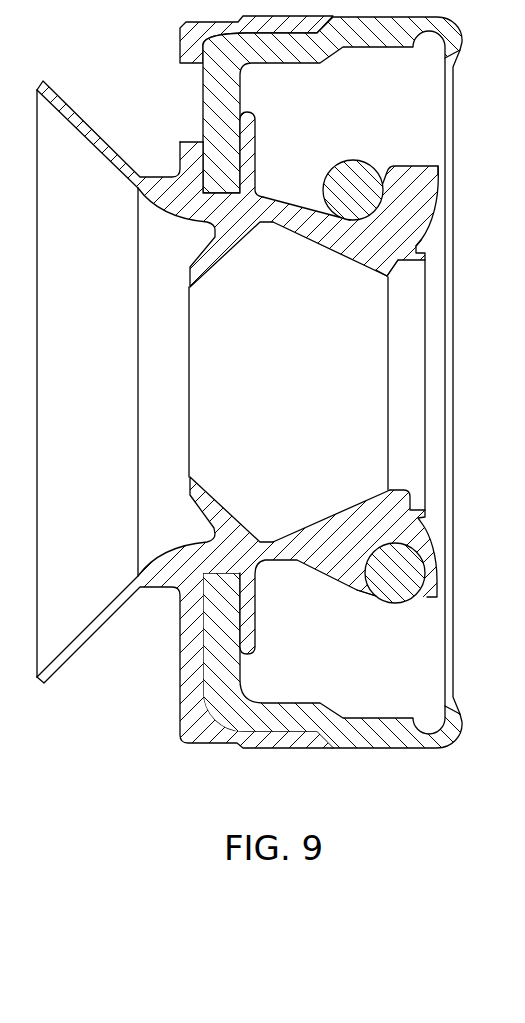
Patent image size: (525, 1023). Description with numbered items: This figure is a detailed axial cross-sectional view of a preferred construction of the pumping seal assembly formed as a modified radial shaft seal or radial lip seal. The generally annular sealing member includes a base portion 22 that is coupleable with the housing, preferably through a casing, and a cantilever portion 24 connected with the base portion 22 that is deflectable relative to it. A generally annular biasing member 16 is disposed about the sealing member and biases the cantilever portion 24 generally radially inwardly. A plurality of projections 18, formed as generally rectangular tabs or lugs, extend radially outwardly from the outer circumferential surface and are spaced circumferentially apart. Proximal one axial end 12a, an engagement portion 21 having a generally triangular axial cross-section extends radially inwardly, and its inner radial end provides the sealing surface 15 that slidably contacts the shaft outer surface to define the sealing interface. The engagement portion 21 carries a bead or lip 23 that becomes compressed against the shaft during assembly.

The axial end 12a is at (459, 197).
The sealing surface 15 is at (388, 403).
The biasing member 16 is at (360, 147).
The projections 18 is at (439, 152).
The engagement portion 21 is at (412, 227).
The base portion 22 is at (183, 142).
The bead or lip 23 is at (386, 277).
The cantilever portion 24 is at (280, 208).